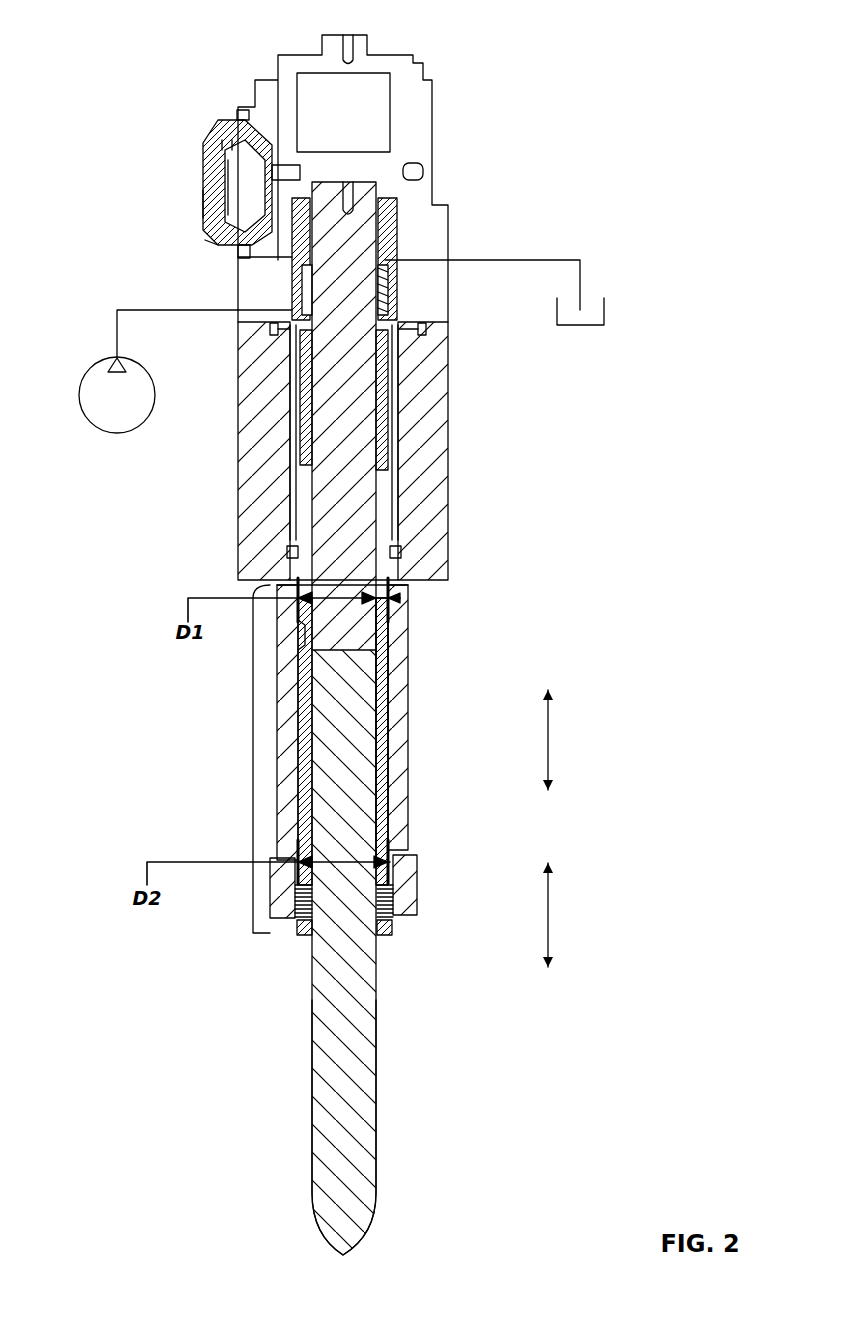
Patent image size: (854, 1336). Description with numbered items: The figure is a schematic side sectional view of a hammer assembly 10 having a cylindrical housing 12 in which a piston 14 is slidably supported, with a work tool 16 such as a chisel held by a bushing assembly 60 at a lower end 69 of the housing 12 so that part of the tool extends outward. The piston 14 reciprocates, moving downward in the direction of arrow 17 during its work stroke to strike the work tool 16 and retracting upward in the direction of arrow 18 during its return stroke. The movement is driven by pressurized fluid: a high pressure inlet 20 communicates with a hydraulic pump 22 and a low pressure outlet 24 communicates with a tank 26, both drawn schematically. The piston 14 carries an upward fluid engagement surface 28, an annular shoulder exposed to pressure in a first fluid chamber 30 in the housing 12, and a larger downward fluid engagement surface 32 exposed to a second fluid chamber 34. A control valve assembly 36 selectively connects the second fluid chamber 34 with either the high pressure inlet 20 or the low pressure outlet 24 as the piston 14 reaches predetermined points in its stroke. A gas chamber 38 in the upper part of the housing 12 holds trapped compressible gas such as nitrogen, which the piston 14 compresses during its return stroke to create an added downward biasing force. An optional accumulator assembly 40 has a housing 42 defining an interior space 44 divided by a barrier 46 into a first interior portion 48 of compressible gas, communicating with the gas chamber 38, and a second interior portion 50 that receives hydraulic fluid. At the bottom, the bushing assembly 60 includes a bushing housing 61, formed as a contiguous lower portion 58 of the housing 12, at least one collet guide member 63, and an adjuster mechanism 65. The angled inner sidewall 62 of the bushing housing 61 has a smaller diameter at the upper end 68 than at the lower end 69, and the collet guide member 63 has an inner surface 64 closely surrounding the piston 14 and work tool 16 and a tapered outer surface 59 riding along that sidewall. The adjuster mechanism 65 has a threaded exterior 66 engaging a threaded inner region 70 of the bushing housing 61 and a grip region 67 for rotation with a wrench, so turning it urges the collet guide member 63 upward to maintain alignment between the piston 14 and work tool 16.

The hammer assembly 10 is at (516, 70).
The housing 12 is at (450, 487).
The piston 14 is at (382, 490).
The work tool 16 is at (378, 1022).
The arrow 17 is at (548, 905).
The arrow 18 is at (548, 748).
The high pressure inlet 20 is at (155, 310).
The hydraulic pump 22 is at (105, 430).
The low pressure outlet 24 is at (580, 260).
The tank 26 is at (604, 308).
The upward fluid engagement surface 28 is at (296, 487).
The first fluid chamber 30 is at (300, 458).
The downward fluid engagement surface 32 is at (386, 302).
The second fluid chamber 34 is at (385, 283).
The control valve assembly 36 is at (303, 278).
The gas chamber 38 is at (315, 110).
The accumulator assembly 40 is at (196, 133).
The housing 42 is at (205, 218).
The interior space 44 is at (210, 240).
The barrier 46 is at (232, 175).
The first interior portion 48 is at (222, 152).
The second interior portion 50 is at (232, 150).
The lower portion 58 is at (452, 621).
The tapered outer surface 59 is at (392, 661).
The bushing assembly 60 is at (253, 762).
The bushing housing 61 is at (277, 686).
The inner sidewall 62 is at (402, 598).
The collet guide member 63 is at (390, 683).
The inner surface 64 is at (382, 742).
The adjuster mechanism 65 is at (396, 902).
The threaded exterior 66 is at (296, 902).
The grip region 67 is at (300, 936).
The upper end 68 is at (298, 632).
The lower end 69 is at (415, 914).
The threaded inner region 70 is at (292, 905).